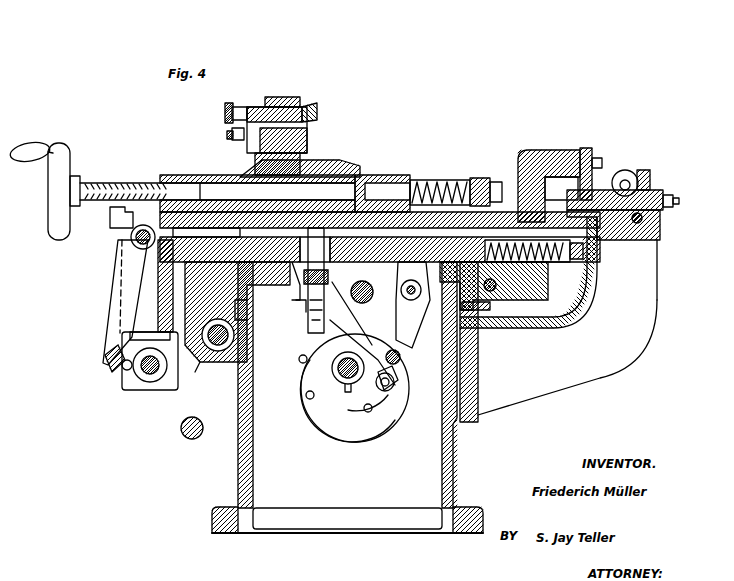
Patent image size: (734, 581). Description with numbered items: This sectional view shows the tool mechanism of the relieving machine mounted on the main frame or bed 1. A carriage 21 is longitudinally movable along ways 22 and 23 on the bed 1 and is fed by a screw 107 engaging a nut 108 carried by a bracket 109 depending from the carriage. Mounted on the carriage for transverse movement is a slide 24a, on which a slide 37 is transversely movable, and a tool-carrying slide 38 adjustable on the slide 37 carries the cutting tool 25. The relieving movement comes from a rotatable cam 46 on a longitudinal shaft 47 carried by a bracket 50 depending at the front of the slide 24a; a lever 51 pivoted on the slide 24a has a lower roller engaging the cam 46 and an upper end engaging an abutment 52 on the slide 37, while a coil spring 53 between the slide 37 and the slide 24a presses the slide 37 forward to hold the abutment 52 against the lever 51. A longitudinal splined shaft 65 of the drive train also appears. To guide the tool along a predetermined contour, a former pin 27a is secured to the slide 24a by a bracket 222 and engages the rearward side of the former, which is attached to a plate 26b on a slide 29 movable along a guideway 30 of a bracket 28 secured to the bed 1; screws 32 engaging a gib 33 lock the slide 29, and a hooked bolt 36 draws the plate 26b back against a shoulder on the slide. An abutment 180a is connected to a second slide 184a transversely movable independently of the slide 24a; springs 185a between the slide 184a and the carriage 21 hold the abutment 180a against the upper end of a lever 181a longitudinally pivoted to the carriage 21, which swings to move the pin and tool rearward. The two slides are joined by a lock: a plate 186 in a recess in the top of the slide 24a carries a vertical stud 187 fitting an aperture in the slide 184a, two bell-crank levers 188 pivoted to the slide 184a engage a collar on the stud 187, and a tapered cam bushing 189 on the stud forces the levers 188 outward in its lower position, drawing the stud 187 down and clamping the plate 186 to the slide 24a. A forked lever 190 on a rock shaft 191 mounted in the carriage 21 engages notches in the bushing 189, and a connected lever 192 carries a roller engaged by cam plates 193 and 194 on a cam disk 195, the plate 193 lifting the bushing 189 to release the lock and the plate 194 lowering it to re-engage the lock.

The main frame or bed 1 is at (455, 458).
The carriage 21 is at (500, 300).
The way 22 is at (268, 290).
The way 23 is at (472, 336).
The cutting tool 25 is at (300, 118).
The tool-carrying slide 38 is at (295, 172).
The abutment 52 is at (132, 232).
The slide 37 is at (385, 180).
The slide 24a is at (437, 182).
The coil spring 53 is at (478, 182).
The bracket 222 is at (525, 158).
The former pin 27a is at (586, 150).
The plate 26b is at (594, 190).
The slide 29 is at (636, 178).
The screw 32 is at (652, 174).
The hooked bolt 36 is at (680, 200).
The guideway 30 is at (630, 238).
The gib 33 is at (658, 244).
The bracket 28 is at (588, 380).
The springs 185a is at (548, 262).
The second slide 184a is at (490, 290).
The lever 51 is at (112, 320).
The bracket 50 is at (160, 305).
The relieving cam 46 is at (140, 380).
The shaft 47 is at (122, 385).
The splined shaft 65 is at (183, 435).
The nut 108 is at (220, 355).
The bracket 109 is at (198, 368).
The screw 107 is at (244, 398).
The plate 186 is at (372, 212).
The bell-crank levers 188 is at (302, 305).
The tapered cam bushing 189 is at (305, 318).
The forked lever 190 is at (360, 305).
The rock shaft 191 is at (355, 330).
The vertical stud 187 is at (334, 362).
The abutment 180a is at (416, 305).
The lever 181a is at (400, 350).
The lever 192 is at (396, 380).
The cam plate 193 is at (328, 420).
The cam plate 194 is at (392, 400).
The cam disk 195 is at (300, 392).